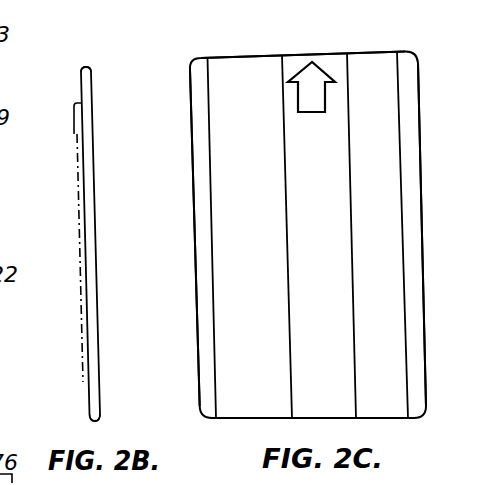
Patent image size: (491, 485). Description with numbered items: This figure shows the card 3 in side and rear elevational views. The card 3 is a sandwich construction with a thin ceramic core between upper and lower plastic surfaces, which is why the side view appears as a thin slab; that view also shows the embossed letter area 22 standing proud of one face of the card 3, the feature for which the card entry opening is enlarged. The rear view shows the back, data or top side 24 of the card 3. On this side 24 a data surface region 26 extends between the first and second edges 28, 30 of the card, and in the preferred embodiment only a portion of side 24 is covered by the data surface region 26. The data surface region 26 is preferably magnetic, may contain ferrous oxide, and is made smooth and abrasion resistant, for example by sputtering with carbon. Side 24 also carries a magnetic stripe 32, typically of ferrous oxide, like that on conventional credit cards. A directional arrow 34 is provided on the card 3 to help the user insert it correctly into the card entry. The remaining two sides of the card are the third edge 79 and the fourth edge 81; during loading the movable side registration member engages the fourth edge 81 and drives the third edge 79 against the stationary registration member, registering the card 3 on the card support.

In FIG. 2B, the card 3 is at (99, 80).
In FIG. 2C, the card 3 is at (412, 36).
In FIG. 2B, the embossed letter area 22 is at (72, 135).
In FIG. 2C, the back, data or top side 24 is at (337, 282).
In FIG. 2C, the data surface region 26 is at (240, 274).
In FIG. 2B, the first edge 28 is at (84, 66).
In FIG. 2C, the first edge 28 is at (251, 56).
In FIG. 2B, the second edge 30 is at (97, 421).
In FIG. 2C, the second edge 30 is at (233, 420).
In FIG. 2C, the magnetic stripe 32 is at (405, 155).
In FIG. 2C, the directional arrow 34 is at (325, 53).
In FIG. 2C, the third edge 79 is at (191, 163).
In FIG. 2C, the fourth edge 81 is at (424, 232).